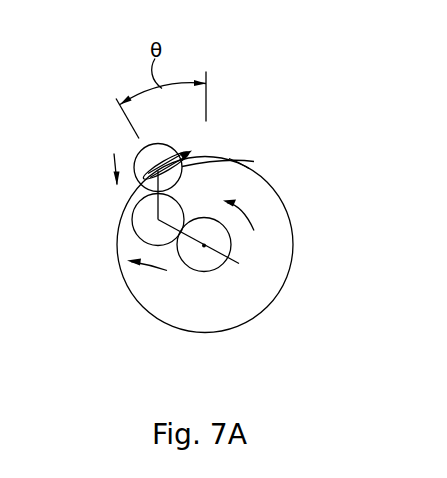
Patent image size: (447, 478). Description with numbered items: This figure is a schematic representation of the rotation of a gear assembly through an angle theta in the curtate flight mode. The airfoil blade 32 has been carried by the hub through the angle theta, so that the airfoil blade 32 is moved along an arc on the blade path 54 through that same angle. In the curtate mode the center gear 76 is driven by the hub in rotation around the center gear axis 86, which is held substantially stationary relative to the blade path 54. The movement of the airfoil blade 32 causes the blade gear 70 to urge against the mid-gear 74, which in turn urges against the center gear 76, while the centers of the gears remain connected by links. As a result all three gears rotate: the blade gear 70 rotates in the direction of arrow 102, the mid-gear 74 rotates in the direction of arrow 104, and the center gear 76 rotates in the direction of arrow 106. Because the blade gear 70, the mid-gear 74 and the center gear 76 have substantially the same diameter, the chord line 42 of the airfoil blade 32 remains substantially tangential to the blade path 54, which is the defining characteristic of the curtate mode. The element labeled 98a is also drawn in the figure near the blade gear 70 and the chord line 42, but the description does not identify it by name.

The airfoil blade 32 is at (235, 163).
The chord line 42 is at (163, 158).
The blade path 54 is at (285, 205).
The blade gear 70 is at (137, 156).
The mid-gear 74 is at (145, 218).
The center gear 76 is at (200, 250).
The center gear axis 86 is at (240, 266).
The contact surface 98a is at (241, 168).
The arrow 102 is at (113, 160).
The arrow 104 is at (153, 274).
The arrow 106 is at (245, 220).